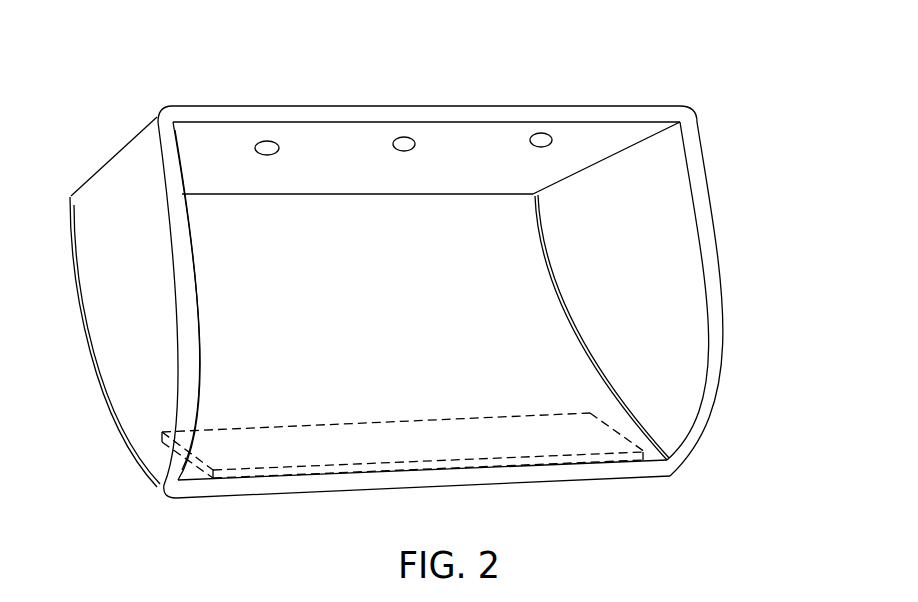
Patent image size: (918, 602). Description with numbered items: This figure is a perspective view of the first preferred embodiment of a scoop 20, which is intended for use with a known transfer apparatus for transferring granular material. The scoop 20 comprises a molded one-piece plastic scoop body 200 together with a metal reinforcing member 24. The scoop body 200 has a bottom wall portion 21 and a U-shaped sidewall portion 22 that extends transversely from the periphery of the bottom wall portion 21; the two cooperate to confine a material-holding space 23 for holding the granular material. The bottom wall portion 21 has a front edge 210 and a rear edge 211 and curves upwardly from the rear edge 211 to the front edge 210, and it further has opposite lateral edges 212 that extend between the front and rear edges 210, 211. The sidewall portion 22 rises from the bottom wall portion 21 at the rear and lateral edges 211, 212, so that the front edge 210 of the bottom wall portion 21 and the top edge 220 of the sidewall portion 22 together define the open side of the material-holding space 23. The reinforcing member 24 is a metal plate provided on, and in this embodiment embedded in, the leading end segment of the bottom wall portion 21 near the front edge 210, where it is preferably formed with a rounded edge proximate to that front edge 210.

The scoop 20 is at (431, 310).
The scoop body 200 is at (718, 193).
The top edge 220 is at (708, 267).
The front edge 210 is at (245, 487).
The bottom wall portion 21 is at (230, 342).
The sidewall portion 22 is at (113, 183).
The rear edge 211 is at (225, 195).
The material-holding space 23 is at (362, 218).
The lateral edges 212 is at (545, 262).
The reinforcing member 24 is at (603, 433).